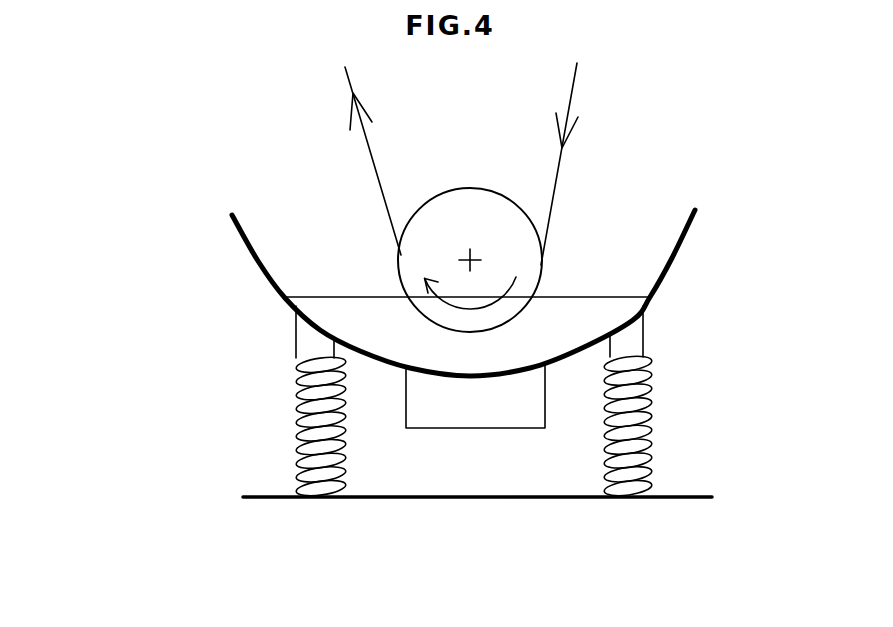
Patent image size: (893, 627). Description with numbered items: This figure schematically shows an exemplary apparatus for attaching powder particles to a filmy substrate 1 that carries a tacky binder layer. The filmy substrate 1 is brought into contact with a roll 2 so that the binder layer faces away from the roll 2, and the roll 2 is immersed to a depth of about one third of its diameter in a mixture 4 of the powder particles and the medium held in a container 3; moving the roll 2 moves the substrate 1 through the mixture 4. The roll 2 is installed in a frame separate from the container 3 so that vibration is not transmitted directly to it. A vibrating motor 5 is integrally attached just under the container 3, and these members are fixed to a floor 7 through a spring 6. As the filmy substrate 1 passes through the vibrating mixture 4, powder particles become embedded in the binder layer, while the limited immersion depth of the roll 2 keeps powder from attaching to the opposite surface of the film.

The filmy substrate 1 is at (572, 100).
The roll 2 is at (445, 218).
The container 3 is at (678, 255).
The mixture 4 is at (553, 323).
The vibrating motor 5 is at (453, 405).
The spring 6 is at (295, 410).
The floor 7 is at (477, 517).